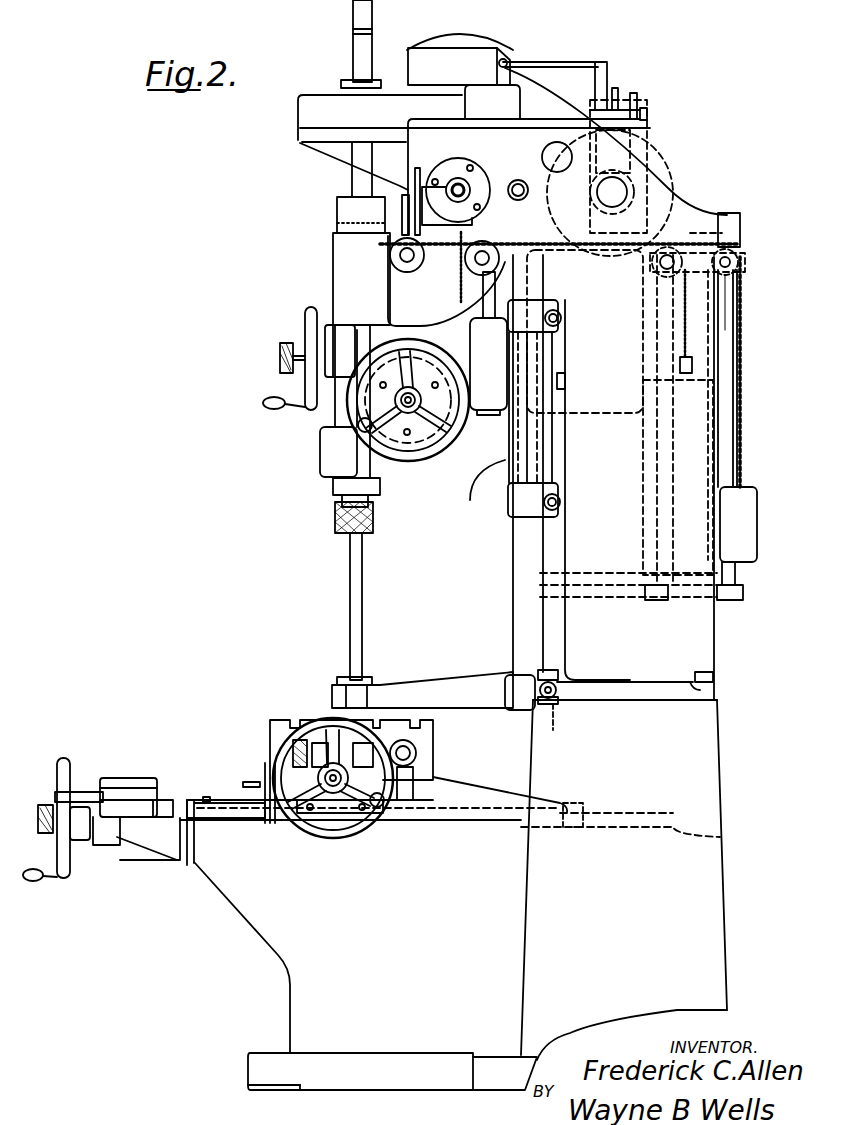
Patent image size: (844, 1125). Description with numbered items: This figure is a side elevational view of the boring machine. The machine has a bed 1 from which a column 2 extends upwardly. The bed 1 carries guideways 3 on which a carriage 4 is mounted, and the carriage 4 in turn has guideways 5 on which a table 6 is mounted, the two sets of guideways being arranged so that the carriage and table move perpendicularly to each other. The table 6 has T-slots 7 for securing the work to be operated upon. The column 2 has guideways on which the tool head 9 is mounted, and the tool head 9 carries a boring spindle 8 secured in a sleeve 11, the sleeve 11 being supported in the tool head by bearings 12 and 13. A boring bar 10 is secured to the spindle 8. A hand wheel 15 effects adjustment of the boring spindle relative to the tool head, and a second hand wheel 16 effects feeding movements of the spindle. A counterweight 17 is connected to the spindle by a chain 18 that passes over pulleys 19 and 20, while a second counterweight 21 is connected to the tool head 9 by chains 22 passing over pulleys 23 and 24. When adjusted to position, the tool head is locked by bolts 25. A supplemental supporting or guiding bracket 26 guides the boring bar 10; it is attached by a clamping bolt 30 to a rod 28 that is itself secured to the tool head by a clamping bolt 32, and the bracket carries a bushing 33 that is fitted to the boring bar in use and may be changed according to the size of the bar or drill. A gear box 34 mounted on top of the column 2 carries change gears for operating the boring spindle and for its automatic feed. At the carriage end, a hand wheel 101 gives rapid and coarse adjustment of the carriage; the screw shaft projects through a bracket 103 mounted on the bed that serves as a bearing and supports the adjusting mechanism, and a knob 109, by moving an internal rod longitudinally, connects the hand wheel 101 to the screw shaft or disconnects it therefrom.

The bed 1 is at (252, 908).
The column 2 is at (708, 658).
The guideways 3 is at (620, 813).
The carriage 4 is at (478, 790).
The guideways 5 is at (276, 762).
The table 6 is at (428, 745).
The T-slots 7 is at (296, 718).
The boring spindle 8 is at (362, 64).
The tool head 9 is at (484, 462).
The boring bar 10 is at (360, 593).
The sleeve 11 is at (333, 256).
The bearing 12 is at (332, 325).
The bearing 13 is at (322, 457).
The hand wheel 15 is at (410, 458).
The hand wheel 16 is at (305, 328).
The counterweight 17 is at (745, 502).
The chain 18 is at (745, 332).
The pulley 19 is at (743, 265).
The pulley 20 is at (408, 272).
The second counterweight 21 is at (652, 397).
The chains 22 is at (683, 345).
The pulley 23 is at (660, 262).
The pulley 24 is at (463, 300).
The bolts 25 is at (566, 382).
The supplemental supporting or guiding bracket 26 is at (430, 690).
The rod 28 is at (537, 626).
The clamping bolt 30 is at (550, 703).
The clamping bolt 32 is at (562, 318).
The bushing 33 is at (368, 680).
The gear box 34 is at (523, 143).
The hand wheel 101 is at (65, 882).
The bracket 103 is at (115, 838).
The knob 109 is at (45, 800).